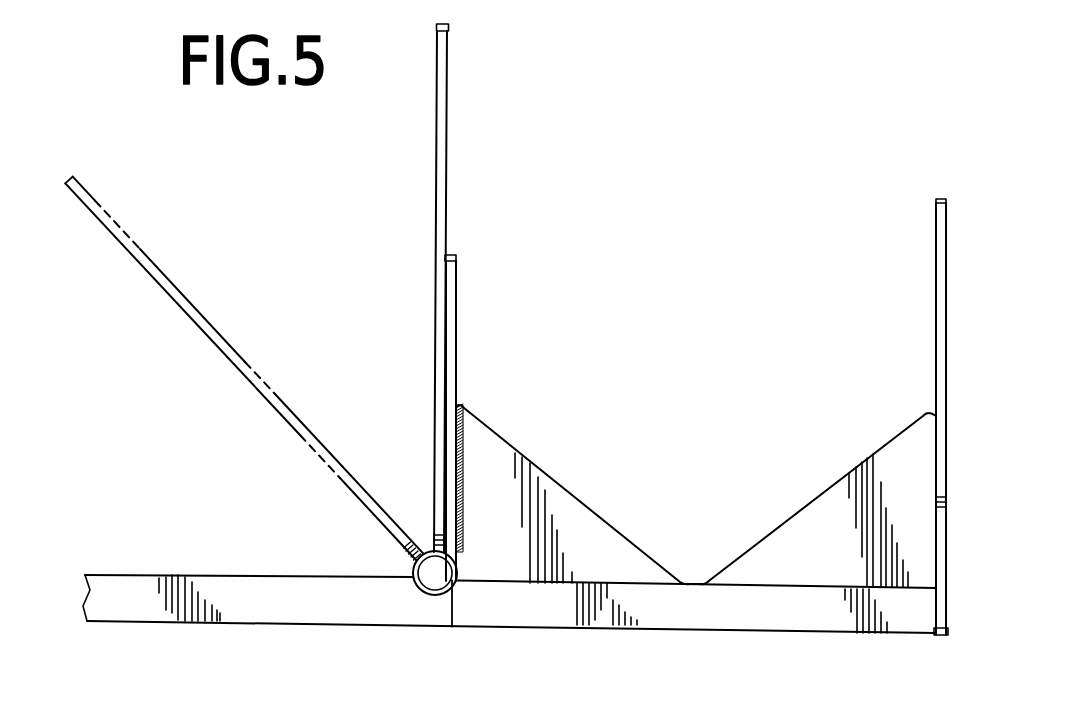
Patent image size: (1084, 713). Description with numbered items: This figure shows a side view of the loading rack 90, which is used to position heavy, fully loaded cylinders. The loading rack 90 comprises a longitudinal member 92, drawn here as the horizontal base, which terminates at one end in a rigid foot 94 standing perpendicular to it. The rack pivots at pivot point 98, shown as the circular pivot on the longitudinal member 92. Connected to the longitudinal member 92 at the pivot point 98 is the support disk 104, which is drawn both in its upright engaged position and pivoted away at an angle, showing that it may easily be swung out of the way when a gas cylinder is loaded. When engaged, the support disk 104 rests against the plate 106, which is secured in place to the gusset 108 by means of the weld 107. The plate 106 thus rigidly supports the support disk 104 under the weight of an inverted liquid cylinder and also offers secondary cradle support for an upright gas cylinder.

The loading rack 90 is at (803, 416).
The longitudinal member 92 is at (331, 600).
The rigid foot 94 is at (937, 320).
The pivot point 98 is at (433, 571).
The support disk 104 is at (437, 121).
The plate 106 is at (456, 357).
The weld 107 is at (458, 493).
The gusset 108 is at (607, 562).